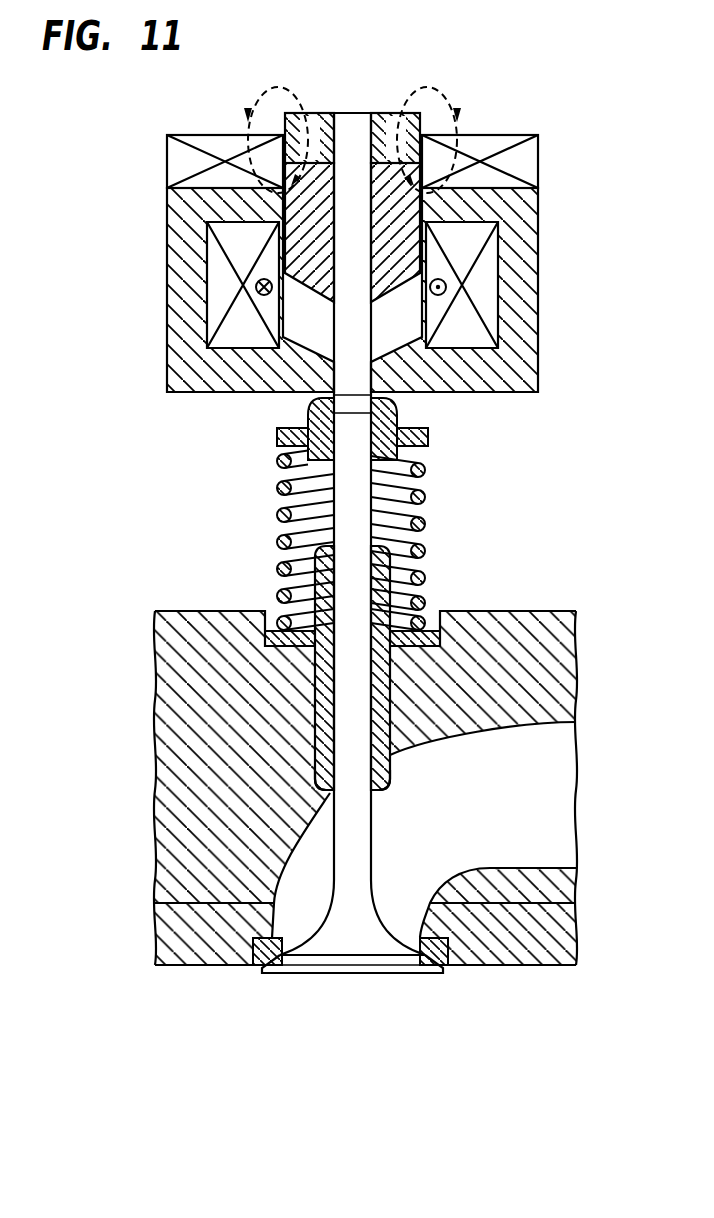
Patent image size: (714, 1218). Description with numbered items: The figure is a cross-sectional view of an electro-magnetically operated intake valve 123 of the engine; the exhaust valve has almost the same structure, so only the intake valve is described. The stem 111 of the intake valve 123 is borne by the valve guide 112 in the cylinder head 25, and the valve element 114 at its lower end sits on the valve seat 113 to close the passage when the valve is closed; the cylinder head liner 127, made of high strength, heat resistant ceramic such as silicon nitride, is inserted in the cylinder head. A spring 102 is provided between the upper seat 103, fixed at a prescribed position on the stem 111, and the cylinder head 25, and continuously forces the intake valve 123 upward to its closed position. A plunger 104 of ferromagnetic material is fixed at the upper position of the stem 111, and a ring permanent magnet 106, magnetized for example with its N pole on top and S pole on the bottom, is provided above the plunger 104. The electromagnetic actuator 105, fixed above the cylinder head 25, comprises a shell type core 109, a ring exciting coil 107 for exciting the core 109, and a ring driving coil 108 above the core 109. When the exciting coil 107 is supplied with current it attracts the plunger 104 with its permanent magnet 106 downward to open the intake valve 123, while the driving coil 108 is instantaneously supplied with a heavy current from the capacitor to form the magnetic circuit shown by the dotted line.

The cylinder head 25 is at (530, 648).
The spring 102 is at (430, 497).
The upper seat 103 is at (430, 440).
The plunger 104 is at (387, 276).
The electromagnetic actuator 105 is at (392, 251).
The ring permanent magnet 106 is at (383, 113).
The ring exciting coil 107 is at (488, 305).
The ring driving coil 108 is at (500, 137).
The shell type core 109 is at (503, 383).
The stem 111 is at (347, 560).
The valve guide 112 is at (390, 765).
The valve seat 113 is at (440, 970).
The valve element 114 is at (318, 960).
The intake valve 123 is at (388, 814).
The cylinder head liner 127 is at (553, 923).